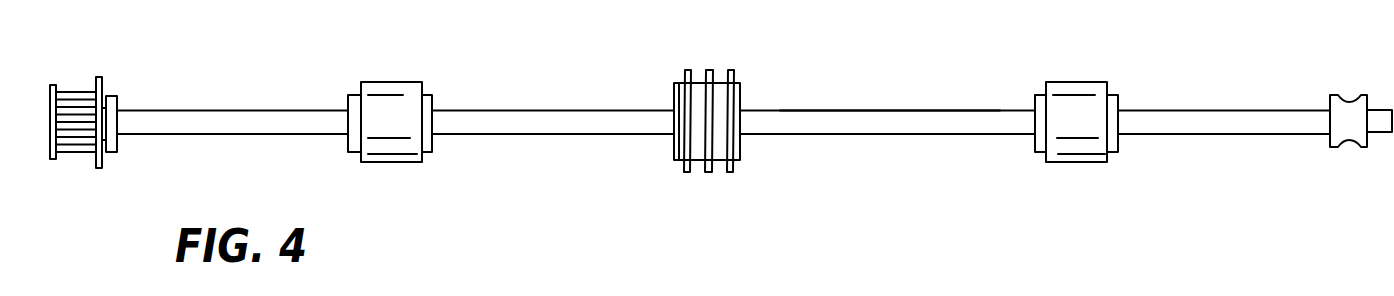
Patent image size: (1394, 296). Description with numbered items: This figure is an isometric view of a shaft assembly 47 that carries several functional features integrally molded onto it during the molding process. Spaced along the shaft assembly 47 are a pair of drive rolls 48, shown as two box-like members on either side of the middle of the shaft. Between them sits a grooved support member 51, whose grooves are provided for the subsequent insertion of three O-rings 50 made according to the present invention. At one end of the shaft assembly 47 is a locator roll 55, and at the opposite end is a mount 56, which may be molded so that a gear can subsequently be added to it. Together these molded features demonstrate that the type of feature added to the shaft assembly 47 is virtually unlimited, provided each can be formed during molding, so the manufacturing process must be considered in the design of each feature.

The shaft assembly 47 is at (536, 110).
The drive rolls 48 is at (393, 90).
The O-rings 50 is at (847, 88).
The grooved support member 51 is at (673, 92).
The locator roll 55 is at (1367, 95).
The mount 56 is at (110, 93).